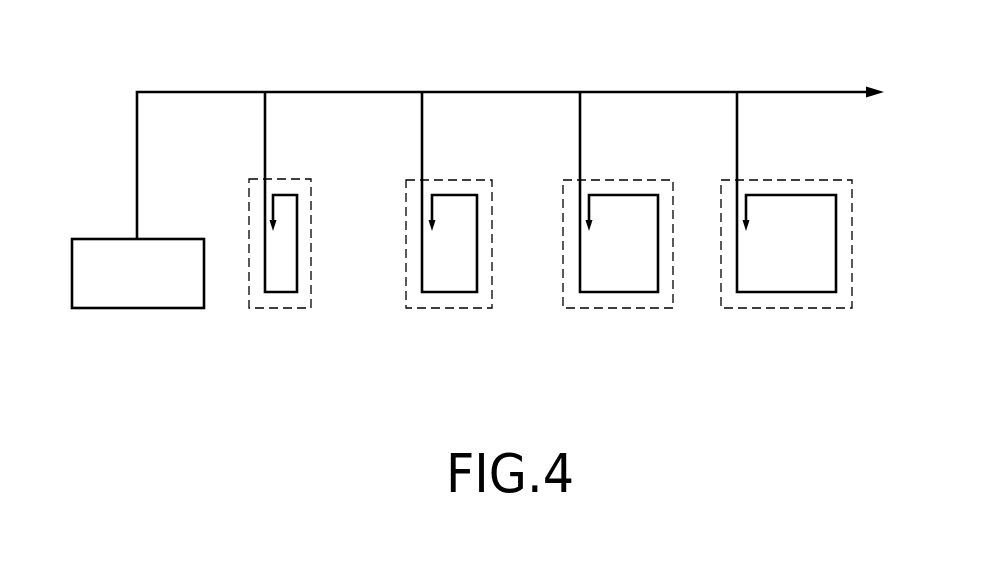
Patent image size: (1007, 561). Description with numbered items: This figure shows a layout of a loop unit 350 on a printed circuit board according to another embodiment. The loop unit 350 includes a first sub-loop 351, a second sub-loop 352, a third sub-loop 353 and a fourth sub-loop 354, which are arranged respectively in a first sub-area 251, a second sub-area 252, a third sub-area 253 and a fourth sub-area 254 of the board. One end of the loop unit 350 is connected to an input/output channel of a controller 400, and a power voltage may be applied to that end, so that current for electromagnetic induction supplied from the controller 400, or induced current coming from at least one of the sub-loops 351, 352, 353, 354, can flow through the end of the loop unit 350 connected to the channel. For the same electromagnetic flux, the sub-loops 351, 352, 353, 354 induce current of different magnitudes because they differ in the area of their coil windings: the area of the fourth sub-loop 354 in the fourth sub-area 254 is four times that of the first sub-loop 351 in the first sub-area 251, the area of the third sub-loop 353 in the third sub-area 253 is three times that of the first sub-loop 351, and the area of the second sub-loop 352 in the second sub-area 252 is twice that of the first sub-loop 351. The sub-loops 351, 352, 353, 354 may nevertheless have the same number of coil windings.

The loop unit 350 is at (187, 90).
The controller 400 is at (164, 238).
The first sub-area 251 is at (287, 178).
The second sub-area 252 is at (455, 178).
The third sub-area 253 is at (621, 178).
The fourth sub-area 254 is at (784, 178).
The first sub-loop 351 is at (290, 293).
The second sub-loop 352 is at (457, 293).
The third sub-loop 353 is at (623, 293).
The fourth sub-loop 354 is at (790, 293).